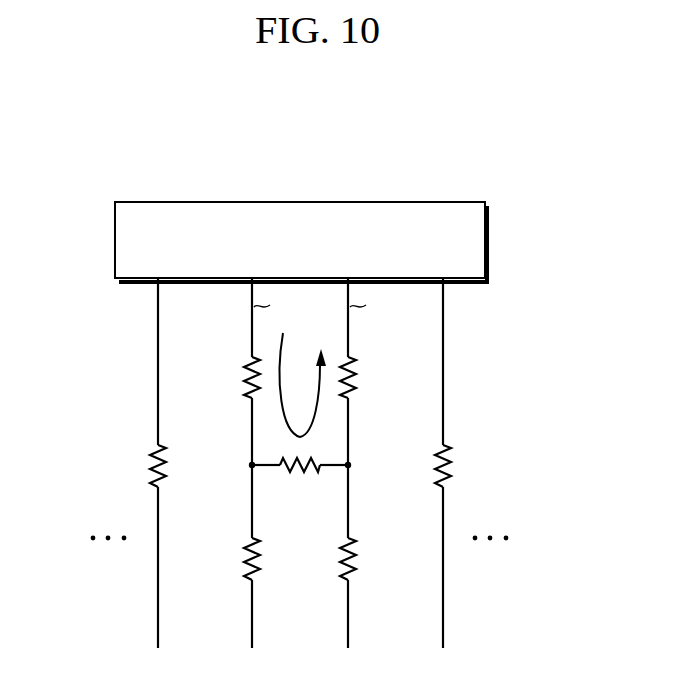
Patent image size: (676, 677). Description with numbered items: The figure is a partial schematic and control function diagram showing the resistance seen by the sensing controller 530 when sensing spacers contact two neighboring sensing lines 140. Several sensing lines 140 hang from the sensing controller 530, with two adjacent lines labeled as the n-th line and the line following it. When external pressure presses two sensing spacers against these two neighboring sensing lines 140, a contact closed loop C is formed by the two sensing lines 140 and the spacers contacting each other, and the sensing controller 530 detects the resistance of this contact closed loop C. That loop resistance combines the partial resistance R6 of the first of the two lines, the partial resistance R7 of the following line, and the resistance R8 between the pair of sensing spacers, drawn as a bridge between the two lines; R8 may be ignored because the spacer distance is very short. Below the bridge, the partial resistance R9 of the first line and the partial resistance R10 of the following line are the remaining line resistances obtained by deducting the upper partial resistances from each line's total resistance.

The sensing controller 530 is at (347, 202).
The sensing lines 140 is at (252, 325).
The partial resistance of the nth sensing line R6 is at (236, 377).
The partial resistance of the (n+1)th sensing line R7 is at (362, 377).
The resistance between the pair of sensing spacers R8 is at (300, 479).
The partial resistance of the nth sensing line R9 is at (236, 559).
The partial resistance of the (n+1)th sensing line R10 is at (366, 559).
The contact closed loop C is at (303, 385).